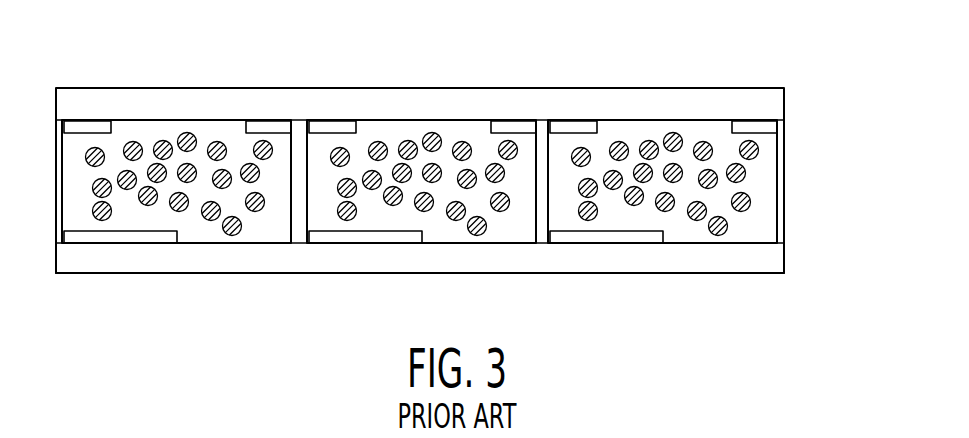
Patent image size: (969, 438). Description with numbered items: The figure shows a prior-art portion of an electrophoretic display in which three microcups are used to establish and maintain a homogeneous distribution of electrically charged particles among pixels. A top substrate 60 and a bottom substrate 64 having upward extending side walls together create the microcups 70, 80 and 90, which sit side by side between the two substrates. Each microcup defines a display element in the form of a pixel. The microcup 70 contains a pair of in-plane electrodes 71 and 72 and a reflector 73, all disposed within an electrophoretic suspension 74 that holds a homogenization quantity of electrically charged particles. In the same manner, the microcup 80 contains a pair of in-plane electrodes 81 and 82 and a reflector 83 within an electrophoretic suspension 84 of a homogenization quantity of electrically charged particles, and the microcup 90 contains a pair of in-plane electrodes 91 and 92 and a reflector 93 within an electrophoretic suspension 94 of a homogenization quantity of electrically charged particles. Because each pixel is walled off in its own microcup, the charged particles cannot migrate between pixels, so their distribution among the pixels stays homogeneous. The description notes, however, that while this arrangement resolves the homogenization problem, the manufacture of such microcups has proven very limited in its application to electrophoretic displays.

The top substrate 60 is at (777, 100).
The bottom substrate 64 is at (775, 258).
The microcup 70 is at (176, 173).
The in-plane electrode 71 is at (88, 127).
The in-plane electrode 72 is at (258, 127).
The reflector 73 is at (130, 233).
The electrophoretic suspension 74 is at (272, 228).
The microcup 80 is at (415, 173).
The in-plane electrode 81 is at (333, 127).
The in-plane electrode 82 is at (518, 127).
The reflector 83 is at (360, 233).
The electrophoretic suspension 84 is at (517, 230).
The microcup 90 is at (662, 162).
The in-plane electrode 91 is at (570, 127).
The in-plane electrode 92 is at (748, 127).
The reflector 93 is at (625, 233).
The electrophoretic suspension 94 is at (753, 228).